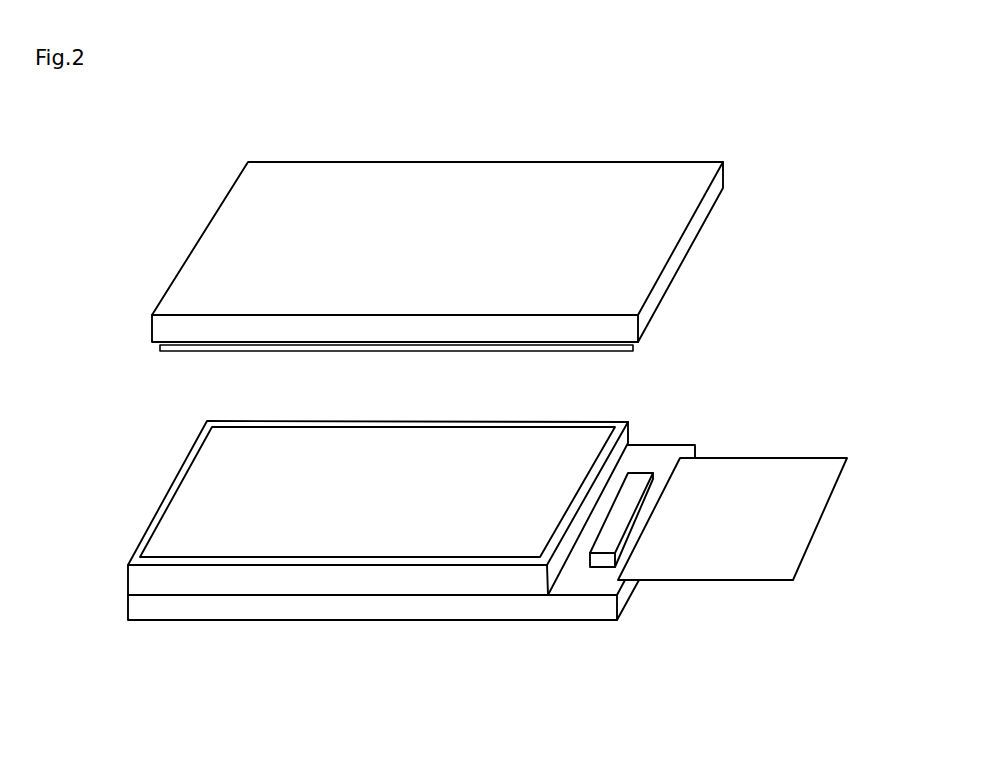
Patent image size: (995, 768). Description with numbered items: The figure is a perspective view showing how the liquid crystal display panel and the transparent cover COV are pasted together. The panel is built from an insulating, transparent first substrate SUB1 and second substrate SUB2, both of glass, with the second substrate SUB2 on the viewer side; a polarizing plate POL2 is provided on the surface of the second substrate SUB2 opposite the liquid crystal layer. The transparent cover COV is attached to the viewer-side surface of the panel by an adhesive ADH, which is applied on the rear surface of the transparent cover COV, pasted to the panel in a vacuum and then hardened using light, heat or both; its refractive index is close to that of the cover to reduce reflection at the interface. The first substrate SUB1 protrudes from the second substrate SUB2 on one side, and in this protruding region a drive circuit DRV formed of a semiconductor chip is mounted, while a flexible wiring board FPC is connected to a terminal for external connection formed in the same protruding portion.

The transparent cover COV is at (595, 188).
The adhesive ADH is at (613, 350).
The polarizing plate POL2 is at (207, 487).
The second substrate SUB2 is at (418, 583).
The first substrate SUB1 is at (542, 612).
The drive circuit DRV is at (630, 493).
The flexible wiring board FPC is at (740, 475).